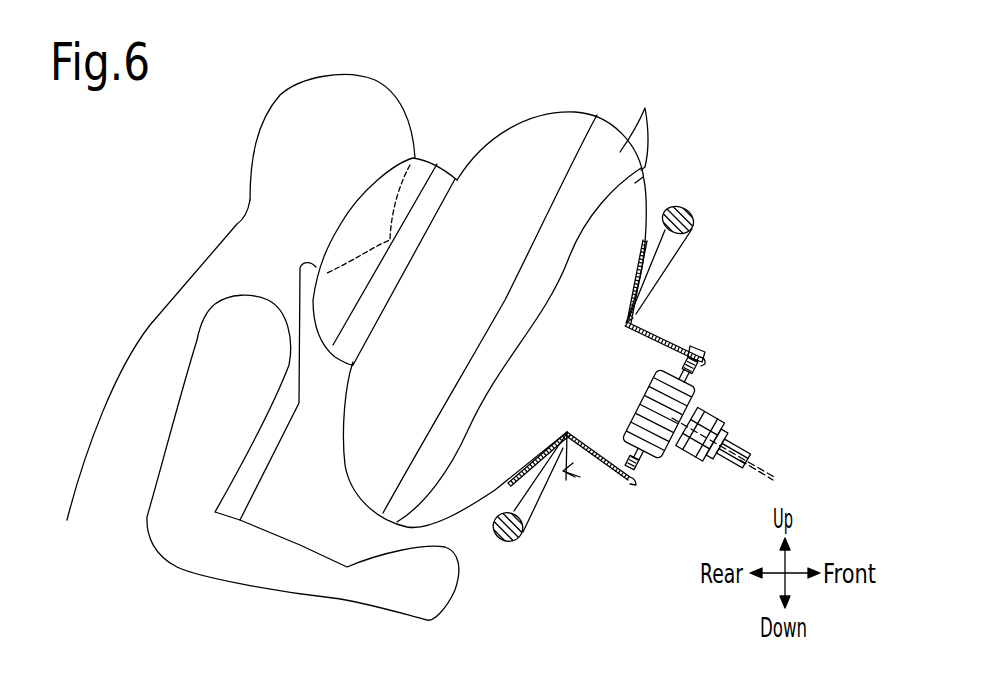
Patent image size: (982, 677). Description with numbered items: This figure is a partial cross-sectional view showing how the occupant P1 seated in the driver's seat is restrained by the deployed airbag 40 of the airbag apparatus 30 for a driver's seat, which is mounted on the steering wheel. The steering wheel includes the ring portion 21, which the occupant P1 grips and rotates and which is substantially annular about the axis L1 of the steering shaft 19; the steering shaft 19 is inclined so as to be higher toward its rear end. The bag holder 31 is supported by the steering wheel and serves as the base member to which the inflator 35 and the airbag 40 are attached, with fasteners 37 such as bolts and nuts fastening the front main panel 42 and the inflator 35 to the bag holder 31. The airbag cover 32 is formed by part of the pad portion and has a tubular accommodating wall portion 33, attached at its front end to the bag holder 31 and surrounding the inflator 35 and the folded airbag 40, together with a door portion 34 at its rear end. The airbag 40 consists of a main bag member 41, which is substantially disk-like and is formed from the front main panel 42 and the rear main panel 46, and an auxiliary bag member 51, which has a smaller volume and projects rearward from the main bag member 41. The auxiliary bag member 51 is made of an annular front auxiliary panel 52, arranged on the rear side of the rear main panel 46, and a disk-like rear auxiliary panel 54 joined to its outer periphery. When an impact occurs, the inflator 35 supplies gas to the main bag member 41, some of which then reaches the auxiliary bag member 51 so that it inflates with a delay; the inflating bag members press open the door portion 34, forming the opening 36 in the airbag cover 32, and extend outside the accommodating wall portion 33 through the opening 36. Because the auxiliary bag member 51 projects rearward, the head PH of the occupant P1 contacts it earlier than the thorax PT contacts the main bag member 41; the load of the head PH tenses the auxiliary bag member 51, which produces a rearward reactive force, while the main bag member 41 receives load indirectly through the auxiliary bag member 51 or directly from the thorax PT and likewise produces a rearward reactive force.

The occupant P1 is at (263, 348).
The head PH is at (263, 110).
The thorax PT is at (299, 406).
The airbag 40 is at (491, 280).
The main bag member 41 is at (526, 273).
The front main panel 42 is at (647, 118).
The rear main panel 46 is at (590, 124).
The auxiliary bag member 51 is at (406, 219).
The front auxiliary panel 52 is at (443, 177).
The rear auxiliary panel 54 is at (418, 163).
The opening 36 is at (617, 349).
The ring portion 21 is at (686, 216).
The airbag cover 32 is at (724, 303).
The accommodating wall portion 33 is at (653, 307).
The door portion 34 is at (647, 268).
The bag holder 31 is at (698, 355).
The fasteners 37 is at (696, 374).
The inflator 35 is at (645, 392).
The airbag apparatus for a driver's seat 30 is at (758, 453).
The steering shaft 19 is at (733, 453).
The axis L1 is at (775, 479).